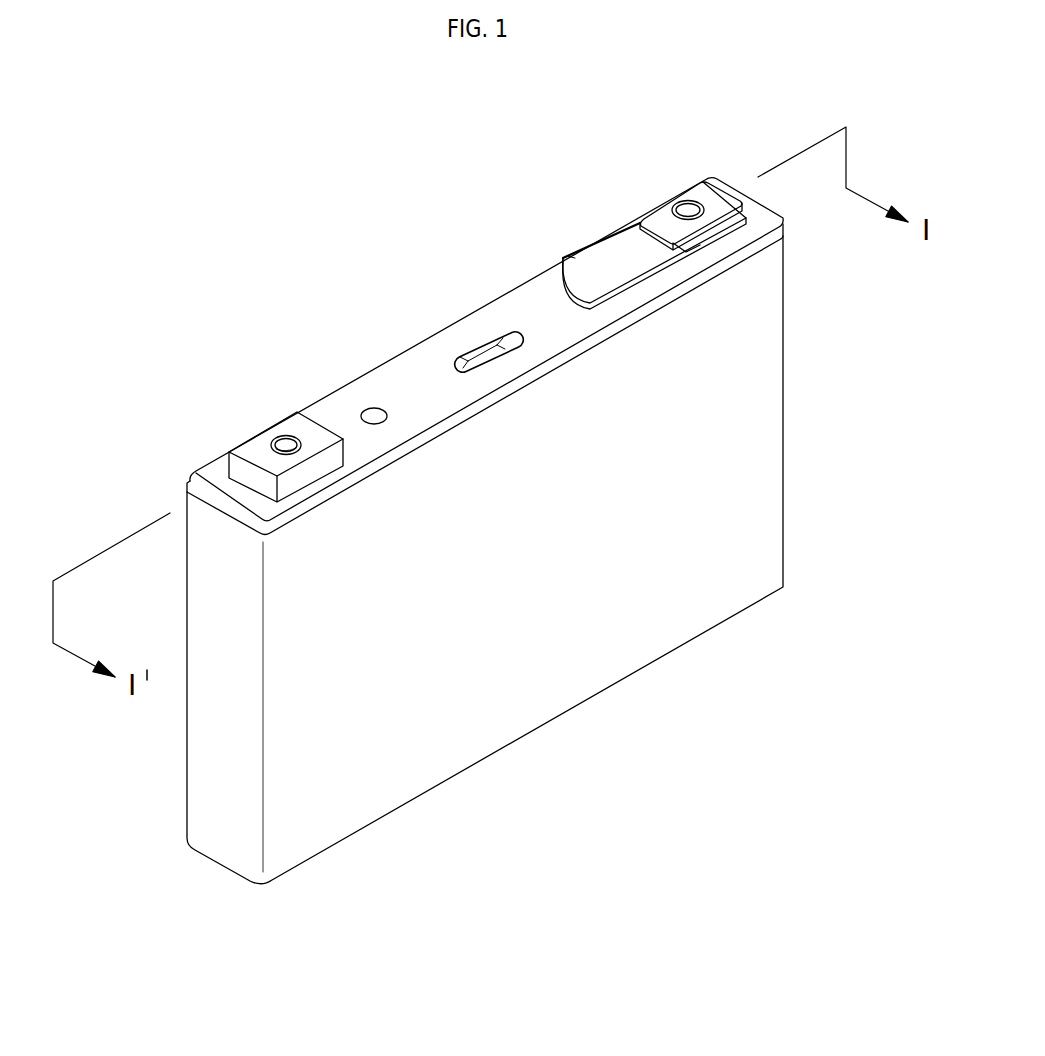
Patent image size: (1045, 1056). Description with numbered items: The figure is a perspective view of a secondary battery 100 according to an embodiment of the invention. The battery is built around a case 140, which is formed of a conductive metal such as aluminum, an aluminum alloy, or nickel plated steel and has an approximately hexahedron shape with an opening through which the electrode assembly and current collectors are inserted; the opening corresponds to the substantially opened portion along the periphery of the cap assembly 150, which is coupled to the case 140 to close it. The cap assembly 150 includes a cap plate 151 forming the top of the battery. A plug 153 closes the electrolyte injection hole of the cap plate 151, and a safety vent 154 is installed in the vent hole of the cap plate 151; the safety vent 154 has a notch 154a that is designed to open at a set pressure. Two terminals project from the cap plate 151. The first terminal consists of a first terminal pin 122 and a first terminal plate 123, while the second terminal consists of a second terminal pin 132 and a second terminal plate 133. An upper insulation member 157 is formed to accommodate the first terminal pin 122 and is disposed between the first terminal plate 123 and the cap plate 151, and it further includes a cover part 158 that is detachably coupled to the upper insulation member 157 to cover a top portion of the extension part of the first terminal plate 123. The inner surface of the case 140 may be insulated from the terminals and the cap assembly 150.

The secondary battery 100 is at (350, 192).
The first terminal pin 122 is at (688, 207).
The first terminal plate 123 is at (662, 217).
The second terminal pin 132 is at (287, 435).
The second terminal plate 133 is at (250, 444).
The case 140 is at (590, 688).
The cap assembly 150 is at (485, 356).
The cap plate 151 is at (548, 293).
The plug 153 is at (373, 409).
The safety vent 154 is at (462, 304).
The notch 154a is at (480, 358).
The upper insulation member 157 is at (566, 275).
The cover part 158 is at (623, 240).